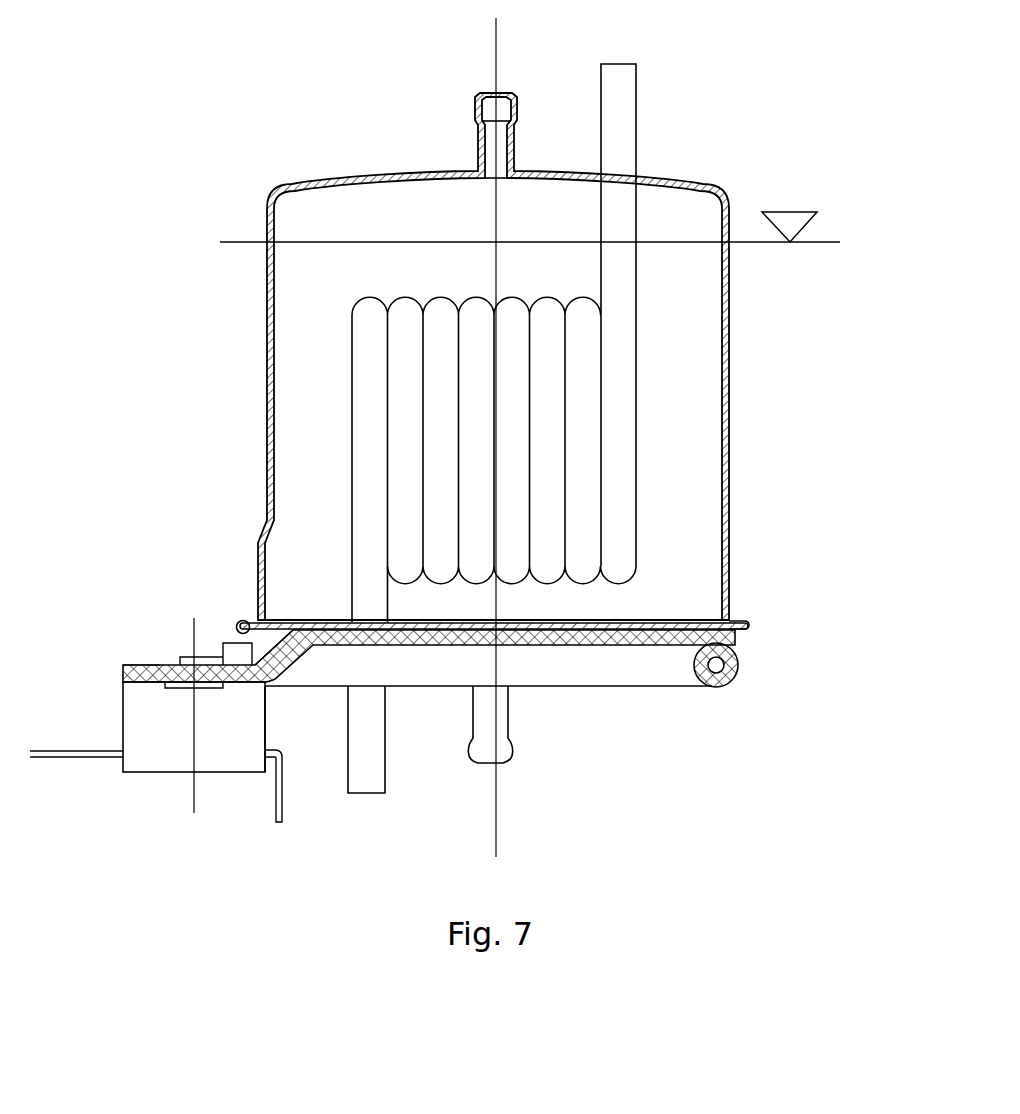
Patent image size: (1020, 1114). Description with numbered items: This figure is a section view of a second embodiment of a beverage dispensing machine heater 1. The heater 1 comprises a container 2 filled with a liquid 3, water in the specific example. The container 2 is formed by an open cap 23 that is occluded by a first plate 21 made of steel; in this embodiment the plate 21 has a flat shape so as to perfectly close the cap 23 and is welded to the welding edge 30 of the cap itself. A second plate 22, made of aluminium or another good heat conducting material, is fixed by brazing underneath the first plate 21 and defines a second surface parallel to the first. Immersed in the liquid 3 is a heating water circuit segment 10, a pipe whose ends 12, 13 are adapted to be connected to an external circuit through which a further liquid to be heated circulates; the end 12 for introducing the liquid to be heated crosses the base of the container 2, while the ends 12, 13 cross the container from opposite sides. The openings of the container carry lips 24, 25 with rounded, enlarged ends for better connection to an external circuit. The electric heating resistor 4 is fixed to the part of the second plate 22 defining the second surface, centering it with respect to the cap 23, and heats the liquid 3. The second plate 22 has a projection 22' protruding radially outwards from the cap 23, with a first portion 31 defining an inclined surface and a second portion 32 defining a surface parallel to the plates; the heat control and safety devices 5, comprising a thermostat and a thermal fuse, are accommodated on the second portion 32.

The heater 1 is at (176, 82).
The container 2 is at (232, 335).
The liquid 3 is at (688, 240).
The electric heating resistor 4 is at (640, 672).
The heat control and safety devices 5 is at (147, 776).
The heating water circuit segment 10 is at (642, 162).
The end of heating water circuit segment 12 is at (372, 783).
The end of heating water circuit segment 13 is at (628, 76).
The first plate 21 is at (240, 630).
The second plate 22 is at (467, 688).
The projection 22' is at (313, 722).
The open cap 23 is at (729, 392).
The lip 24 is at (520, 112).
The lip 25 is at (505, 748).
The welding edge 30 is at (238, 618).
The first portion 31 is at (272, 662).
The second portion 32 is at (148, 664).